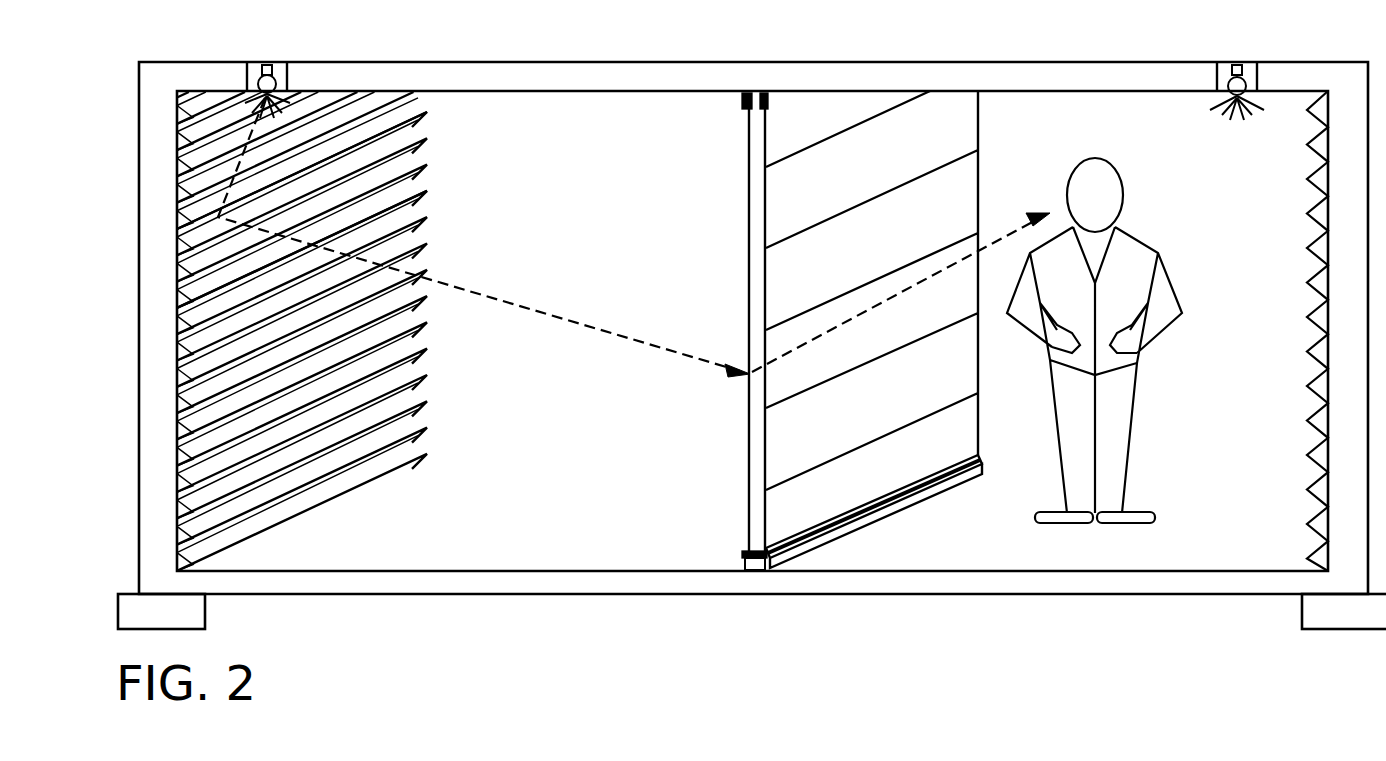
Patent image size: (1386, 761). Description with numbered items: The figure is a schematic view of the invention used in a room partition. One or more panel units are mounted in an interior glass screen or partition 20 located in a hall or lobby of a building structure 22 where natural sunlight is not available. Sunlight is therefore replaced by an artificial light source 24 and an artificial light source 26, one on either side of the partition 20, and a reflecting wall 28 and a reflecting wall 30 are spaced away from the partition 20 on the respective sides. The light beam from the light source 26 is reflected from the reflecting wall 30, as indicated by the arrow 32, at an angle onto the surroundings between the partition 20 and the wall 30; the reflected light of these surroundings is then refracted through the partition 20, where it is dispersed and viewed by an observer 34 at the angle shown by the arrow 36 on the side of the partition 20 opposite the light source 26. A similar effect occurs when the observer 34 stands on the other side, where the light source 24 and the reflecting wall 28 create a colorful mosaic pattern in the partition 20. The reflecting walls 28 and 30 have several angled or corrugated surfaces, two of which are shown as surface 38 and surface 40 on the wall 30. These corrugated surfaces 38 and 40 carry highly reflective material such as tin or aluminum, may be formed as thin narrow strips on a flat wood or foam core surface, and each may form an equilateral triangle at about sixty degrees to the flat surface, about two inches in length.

The partition 20 is at (748, 210).
The building structure 22 is at (808, 61).
The artificial light source 24 is at (1237, 62).
The artificial light source 26 is at (265, 62).
The reflecting wall 28 is at (1307, 182).
The reflecting wall 30 is at (420, 175).
The arrow 32 is at (497, 302).
The observer 34 is at (1115, 188).
The arrow 36 is at (874, 302).
The corrugated surface 38 is at (177, 237).
The corrugated surface 40 is at (177, 308).